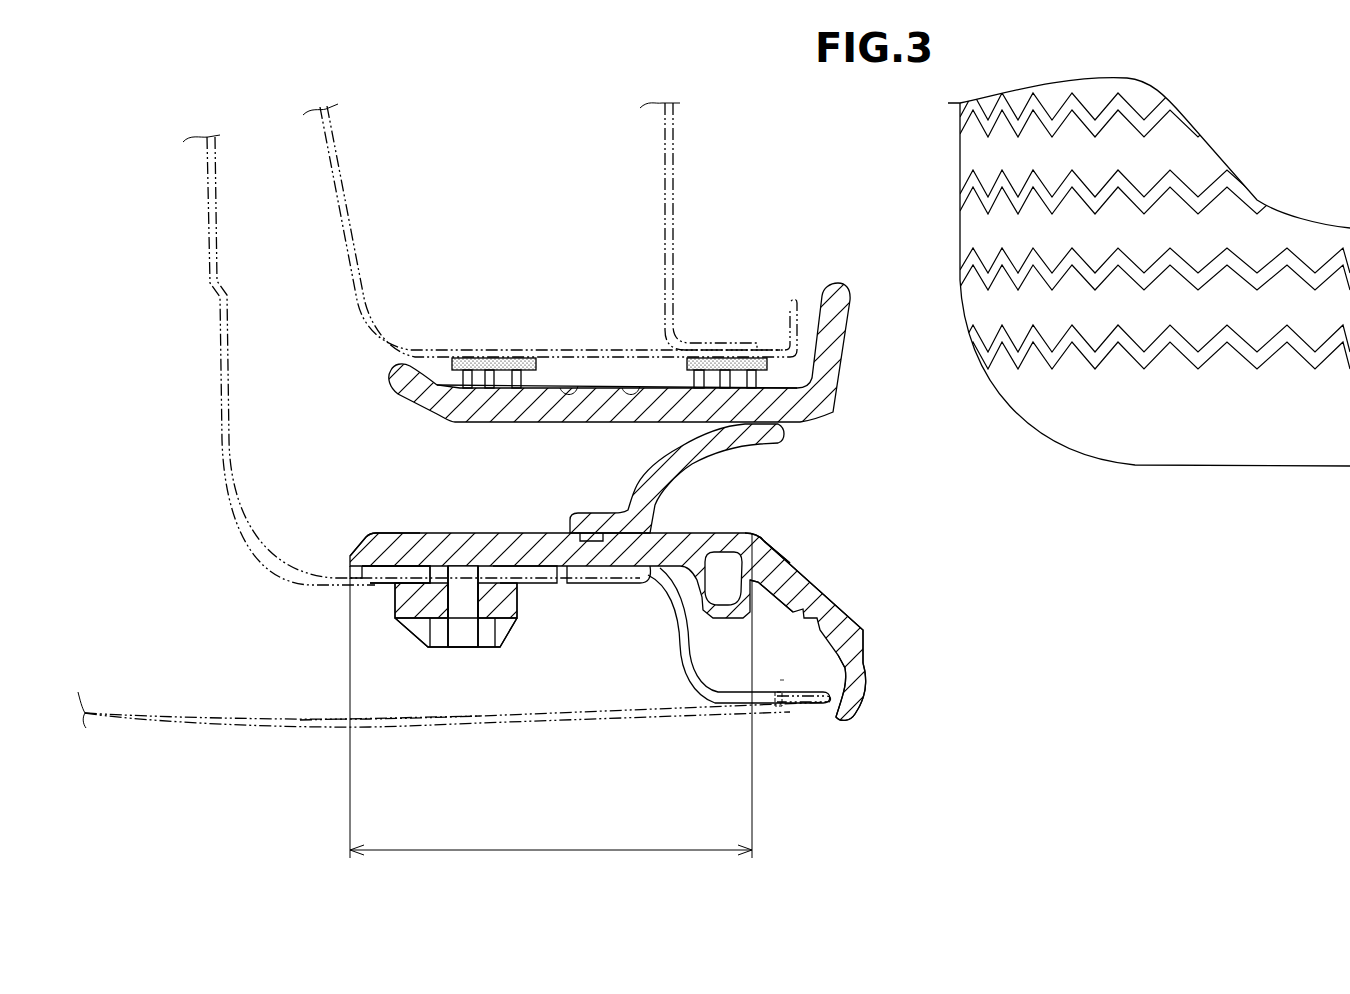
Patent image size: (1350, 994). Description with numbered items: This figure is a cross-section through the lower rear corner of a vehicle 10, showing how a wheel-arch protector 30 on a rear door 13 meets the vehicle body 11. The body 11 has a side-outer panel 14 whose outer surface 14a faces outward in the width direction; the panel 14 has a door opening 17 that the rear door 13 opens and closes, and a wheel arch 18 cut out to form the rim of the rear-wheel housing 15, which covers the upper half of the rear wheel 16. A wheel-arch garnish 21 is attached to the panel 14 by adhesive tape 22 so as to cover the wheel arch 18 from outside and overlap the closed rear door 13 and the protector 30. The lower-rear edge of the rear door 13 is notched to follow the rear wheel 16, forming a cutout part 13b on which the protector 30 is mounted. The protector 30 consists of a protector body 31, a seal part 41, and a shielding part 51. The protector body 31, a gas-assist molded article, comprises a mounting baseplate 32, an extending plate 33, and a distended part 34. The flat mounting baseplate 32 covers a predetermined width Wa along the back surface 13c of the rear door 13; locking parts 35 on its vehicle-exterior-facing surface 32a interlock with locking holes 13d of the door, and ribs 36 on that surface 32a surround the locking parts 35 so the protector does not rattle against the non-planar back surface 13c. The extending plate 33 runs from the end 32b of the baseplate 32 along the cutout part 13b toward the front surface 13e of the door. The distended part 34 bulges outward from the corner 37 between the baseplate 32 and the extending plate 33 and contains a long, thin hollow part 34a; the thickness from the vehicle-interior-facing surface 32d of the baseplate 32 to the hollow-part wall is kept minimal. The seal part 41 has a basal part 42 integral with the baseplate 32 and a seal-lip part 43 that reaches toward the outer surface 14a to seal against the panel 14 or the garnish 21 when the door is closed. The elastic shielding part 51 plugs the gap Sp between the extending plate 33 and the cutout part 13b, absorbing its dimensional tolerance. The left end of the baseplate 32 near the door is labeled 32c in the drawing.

The vehicle 10 is at (1110, 644).
The vehicle body 11 is at (692, 128).
The rear door 13 is at (240, 728).
The cutout part 13b is at (864, 699).
The back surface of the rear door 13c is at (400, 566).
The locking hole 13d is at (430, 612).
The front surface of the rear door 13e is at (382, 726).
The side-outer panel 14 is at (556, 388).
The outer surface of the side-outer panel 14a is at (618, 388).
The rear-wheel housing 15 is at (675, 192).
The rear wheel 16 is at (1217, 452).
The door opening 17 is at (339, 174).
The wheel arch 18 is at (840, 313).
The wheel-arch garnish 21 is at (846, 362).
The adhesive tape 22 is at (483, 356).
The wheel-arch protector 30 is at (893, 625).
The protector body 31 is at (718, 789).
The mounting baseplate 32 is at (648, 574).
The vehicle-exterior-facing surface of the mounting baseplate 32a is at (592, 568).
The end of the mounting baseplate 32b is at (770, 548).
The left end of base 32c is at (348, 566).
The vehicle-interior-facing surface of the mounting baseplate 32d is at (410, 534).
The extending plate 33 is at (770, 604).
The distended part 34 is at (692, 622).
The hollow part 34a is at (727, 581).
The locking part 35 is at (462, 615).
The rib 36 is at (378, 568).
The corner 37 is at (760, 550).
The seal part 41 is at (515, 432).
The basal part 42 is at (600, 504).
The seal-lip part 43 is at (676, 443).
The shielding part 51 is at (870, 672).
The gap Sp is at (781, 690).
The predetermined width Wa is at (551, 695).